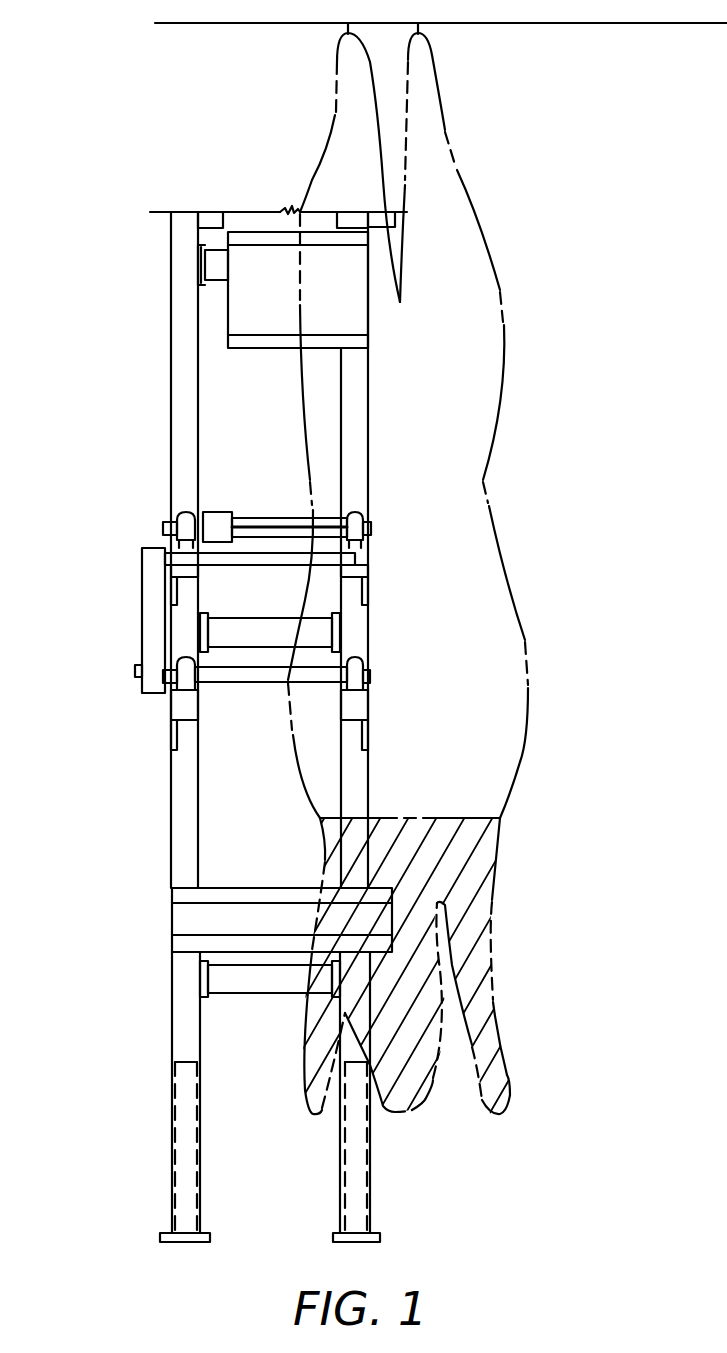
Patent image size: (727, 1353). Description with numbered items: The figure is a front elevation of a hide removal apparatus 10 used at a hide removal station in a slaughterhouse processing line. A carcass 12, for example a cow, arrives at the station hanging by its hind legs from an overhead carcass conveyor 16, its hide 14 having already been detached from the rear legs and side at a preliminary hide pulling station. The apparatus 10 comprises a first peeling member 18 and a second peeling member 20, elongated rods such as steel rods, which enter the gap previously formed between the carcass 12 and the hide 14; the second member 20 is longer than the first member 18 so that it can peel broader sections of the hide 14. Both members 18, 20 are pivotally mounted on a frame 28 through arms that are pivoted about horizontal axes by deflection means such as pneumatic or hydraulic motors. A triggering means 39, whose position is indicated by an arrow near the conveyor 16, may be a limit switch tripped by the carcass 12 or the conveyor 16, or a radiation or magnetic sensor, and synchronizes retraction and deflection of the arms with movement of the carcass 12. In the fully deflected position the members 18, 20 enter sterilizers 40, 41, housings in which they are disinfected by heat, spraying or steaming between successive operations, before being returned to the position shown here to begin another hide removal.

The apparatus 10 is at (104, 520).
The carcass 12 is at (505, 765).
The hide 14 is at (480, 877).
The carcass conveyor 16 is at (574, 23).
The first peeling member 18 is at (281, 523).
The second peeling member 20 is at (268, 558).
The frame 28 is at (185, 778).
The triggering means 39 is at (250, 24).
The sterilizer 40 is at (263, 340).
The sterilizer 41 is at (264, 886).